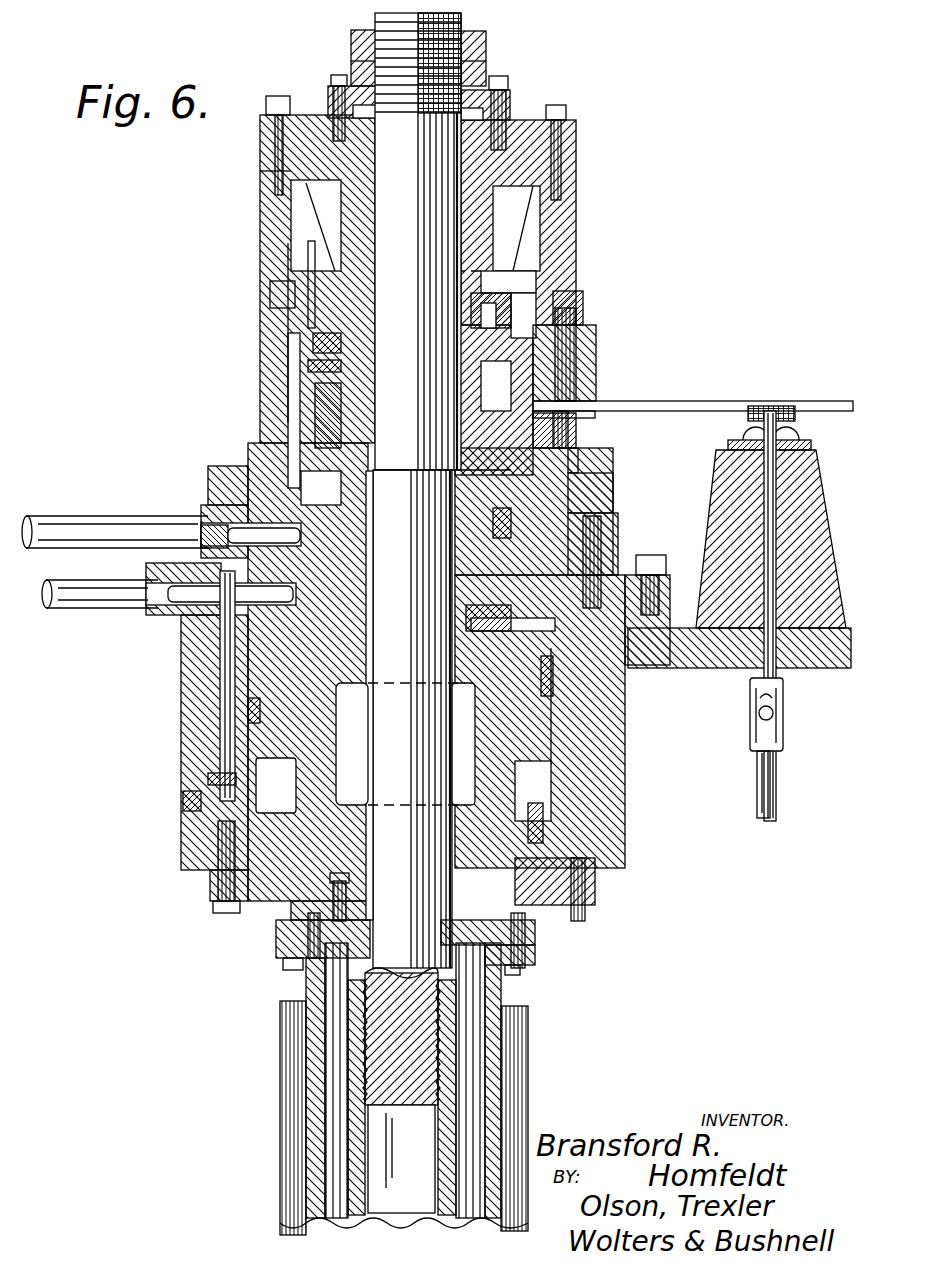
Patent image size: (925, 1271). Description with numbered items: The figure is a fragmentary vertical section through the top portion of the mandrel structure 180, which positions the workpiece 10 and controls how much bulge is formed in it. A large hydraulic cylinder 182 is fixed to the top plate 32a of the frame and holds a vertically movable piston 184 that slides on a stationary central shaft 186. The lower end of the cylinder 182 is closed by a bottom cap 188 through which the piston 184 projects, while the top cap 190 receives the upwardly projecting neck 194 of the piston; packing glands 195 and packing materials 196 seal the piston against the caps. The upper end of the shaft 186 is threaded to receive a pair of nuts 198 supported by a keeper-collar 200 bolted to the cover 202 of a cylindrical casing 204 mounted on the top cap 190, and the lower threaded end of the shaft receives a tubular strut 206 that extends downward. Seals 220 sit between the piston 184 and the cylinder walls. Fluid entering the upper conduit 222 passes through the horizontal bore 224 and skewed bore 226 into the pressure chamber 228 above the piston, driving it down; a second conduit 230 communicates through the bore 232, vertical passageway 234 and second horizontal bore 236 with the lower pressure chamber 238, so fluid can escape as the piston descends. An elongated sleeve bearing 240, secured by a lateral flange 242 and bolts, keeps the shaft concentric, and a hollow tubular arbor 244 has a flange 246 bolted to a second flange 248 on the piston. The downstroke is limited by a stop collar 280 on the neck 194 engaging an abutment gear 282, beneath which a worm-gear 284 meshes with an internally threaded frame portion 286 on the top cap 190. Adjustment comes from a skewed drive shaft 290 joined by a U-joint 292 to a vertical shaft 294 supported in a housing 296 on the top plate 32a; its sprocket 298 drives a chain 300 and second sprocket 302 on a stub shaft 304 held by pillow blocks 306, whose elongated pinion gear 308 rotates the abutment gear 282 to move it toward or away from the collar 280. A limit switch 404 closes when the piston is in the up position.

The workpiece 10 is at (522, 1010).
The top plate 32a is at (720, 660).
The mandrel structure 180 is at (585, 186).
The hydraulic cylinder 182 is at (612, 728).
The piston 184 is at (527, 812).
The central shaft 186 is at (369, 20).
The bottom cap 188 is at (590, 880).
The top cap 190 is at (608, 510).
The neck 194 is at (575, 452).
The packing gland 195 is at (492, 500).
The packing material 196 is at (362, 522).
The nuts 198 is at (480, 50).
The keeper-collar 200 is at (503, 90).
The cover 202 is at (568, 122).
The cylindrical casing 204 is at (570, 216).
The tubular strut 206 is at (442, 1082).
The seals 220 is at (242, 692).
The upper conduit 222 is at (60, 520).
The horizontal bore 224 is at (197, 512).
The skewed bore 226 is at (195, 565).
The pressure chamber 228 is at (332, 685).
The second conduit 230 is at (50, 574).
The bore 232 is at (172, 613).
The vertical passageway 234 is at (215, 708).
The second horizontal bore 236 is at (177, 805).
The pressure chamber 238 is at (276, 785).
The sleeve bearing 240 is at (292, 892).
The lateral flange 242 is at (340, 912).
The tubular arbor 244 is at (300, 983).
The flange 246 is at (530, 950).
The second flange 248 is at (530, 927).
The stop collar 280 is at (503, 287).
The abutment gear 282 is at (305, 330).
The worm-gear 284 is at (300, 358).
The internally threaded frame portion 286 is at (300, 415).
The drive shaft 290 is at (765, 782).
The U-joint 292 is at (772, 728).
The vertical shaft 294 is at (770, 455).
The housing 296 is at (708, 458).
The sprocket 298 is at (818, 393).
The chain 300 is at (688, 393).
The second sprocket 302 is at (572, 412).
The stub shaft 304 is at (568, 292).
The pillow blocks 306 is at (578, 307).
The pinion gear 308 is at (590, 345).
The limit switch 404 is at (280, 282).